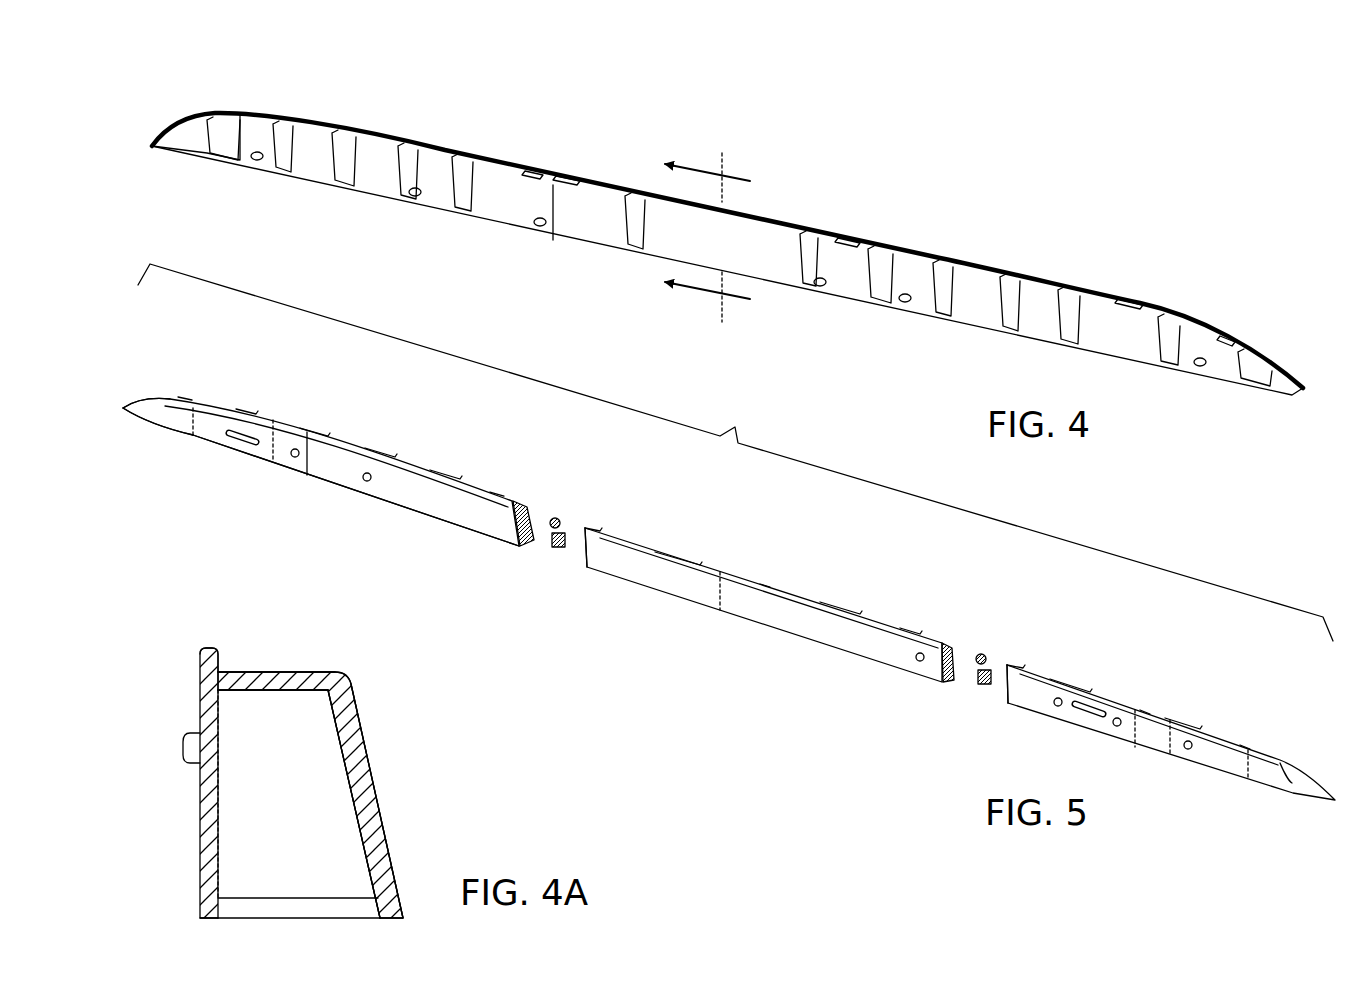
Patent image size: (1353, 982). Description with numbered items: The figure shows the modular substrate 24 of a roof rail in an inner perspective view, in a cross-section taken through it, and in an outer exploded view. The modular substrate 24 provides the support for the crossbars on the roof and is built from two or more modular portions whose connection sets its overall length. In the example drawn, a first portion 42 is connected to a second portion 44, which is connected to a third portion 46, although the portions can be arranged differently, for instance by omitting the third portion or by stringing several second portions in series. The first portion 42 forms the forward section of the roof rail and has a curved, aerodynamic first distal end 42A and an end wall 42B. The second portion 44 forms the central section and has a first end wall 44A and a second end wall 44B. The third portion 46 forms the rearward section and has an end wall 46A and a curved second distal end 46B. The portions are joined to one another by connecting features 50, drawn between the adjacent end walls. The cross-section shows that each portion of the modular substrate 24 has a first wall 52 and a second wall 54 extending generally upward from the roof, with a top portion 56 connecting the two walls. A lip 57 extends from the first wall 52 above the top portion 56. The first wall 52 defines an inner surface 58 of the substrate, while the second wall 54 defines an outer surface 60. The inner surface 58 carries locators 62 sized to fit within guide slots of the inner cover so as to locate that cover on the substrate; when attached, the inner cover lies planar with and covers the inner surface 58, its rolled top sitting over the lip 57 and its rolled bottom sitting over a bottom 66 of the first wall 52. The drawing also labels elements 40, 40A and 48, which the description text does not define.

In FIG. 4, the modular substrate 24 is at (1166, 258).
In FIG. 5, the modular substrate 24 is at (735, 452).
In FIG. 5, the garnish body 40 is at (1168, 688).
In FIG. 4, the first end of garnish 40A is at (187, 131).
In FIG. 4, the first portion 42 is at (357, 128).
In FIG. 5, the first portion 42 is at (337, 453).
In FIG. 5, the first distal end 42A is at (160, 414).
In FIG. 5, the end wall 42B is at (530, 520).
In FIG. 4, the second portion 44 is at (658, 195).
In FIG. 5, the second portion 44 is at (776, 561).
In FIG. 5, the first end wall 44A is at (583, 530).
In FIG. 5, the second end wall 44B is at (963, 647).
In FIG. 4, the third portion 46 is at (1073, 288).
In FIG. 5, the end wall 46A is at (1002, 670).
In FIG. 5, the second distal end 46B is at (1287, 781).
In FIG. 4A, the outer wall 48 is at (351, 795).
In FIG. 5, the connecting features 50 is at (576, 573).
In FIG. 4A, the first wall 52 is at (205, 858).
In FIG. 4A, the second wall 54 is at (380, 853).
In FIG. 4A, the top portion 56 is at (248, 690).
In FIG. 4A, the lip 57 is at (207, 648).
In FIG. 4, the inner surface 58 is at (580, 233).
In FIG. 5, the outer surface 60 is at (426, 514).
In FIG. 4A, the outer surface 60 is at (159, 743).
In FIG. 5, the locators 62 is at (230, 438).
In FIG. 4A, the locators 62 is at (191, 742).
In FIG. 4A, the bottom 66 is at (208, 918).